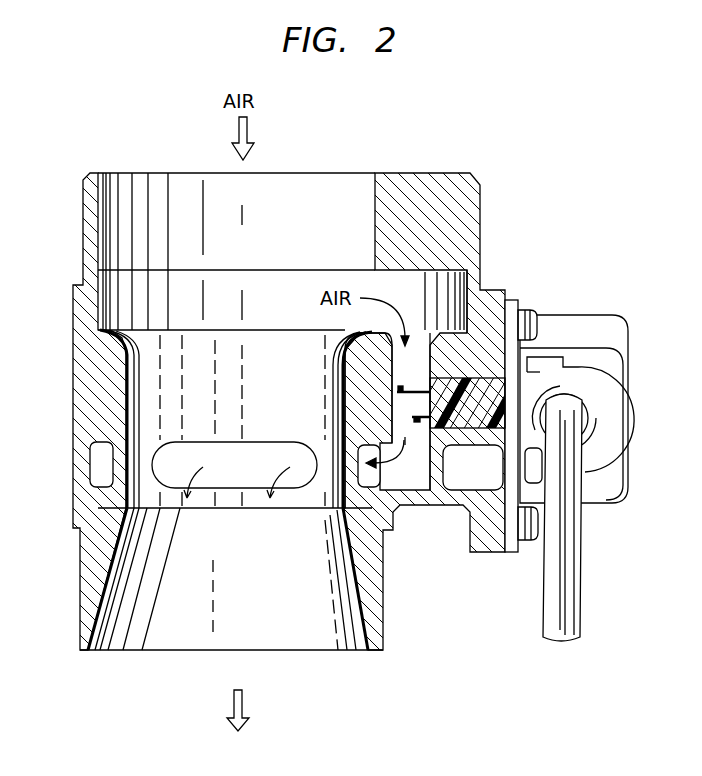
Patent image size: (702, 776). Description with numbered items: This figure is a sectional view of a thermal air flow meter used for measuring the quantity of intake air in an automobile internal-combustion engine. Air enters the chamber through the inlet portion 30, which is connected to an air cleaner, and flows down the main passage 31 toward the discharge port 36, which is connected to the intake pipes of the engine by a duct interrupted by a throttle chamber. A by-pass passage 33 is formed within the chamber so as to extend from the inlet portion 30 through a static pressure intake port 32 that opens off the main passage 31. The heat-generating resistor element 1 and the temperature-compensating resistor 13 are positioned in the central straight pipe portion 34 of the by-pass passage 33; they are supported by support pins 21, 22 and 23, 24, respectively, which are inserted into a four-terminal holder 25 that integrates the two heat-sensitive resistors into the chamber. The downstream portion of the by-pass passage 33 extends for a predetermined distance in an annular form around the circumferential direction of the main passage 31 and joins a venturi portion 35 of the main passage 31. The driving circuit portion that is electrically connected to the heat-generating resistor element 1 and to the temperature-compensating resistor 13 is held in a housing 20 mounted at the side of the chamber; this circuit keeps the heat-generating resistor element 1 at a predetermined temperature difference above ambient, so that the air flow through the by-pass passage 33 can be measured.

The heat-generating resistor element 1 is at (398, 388).
The temperature-compensating resistor 13 is at (417, 425).
The housing 20 is at (591, 331).
The support pin 21 is at (356, 393).
The support pin 22 is at (400, 395).
The support pin 23 is at (442, 497).
The support pin 24 is at (420, 424).
The 4-terminal holder 25 is at (484, 382).
The inlet portion 30 is at (197, 174).
The main passage 31 is at (135, 343).
The static pressure intake port 32 is at (447, 280).
The by-pass passage 33 is at (362, 362).
The central straight pipe portion 34 is at (404, 440).
The venturi portion 35 is at (133, 407).
The discharge port 36 is at (160, 635).